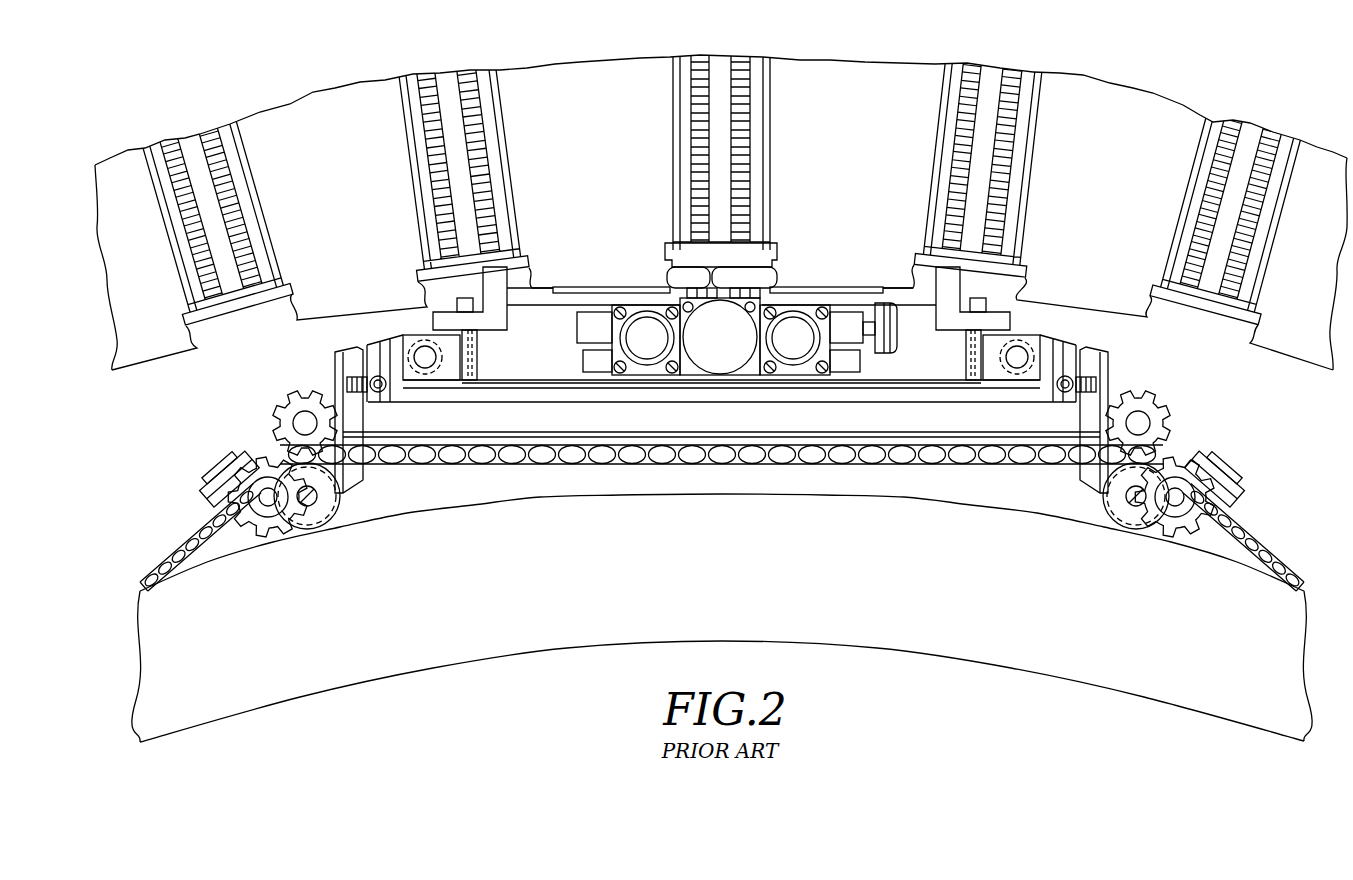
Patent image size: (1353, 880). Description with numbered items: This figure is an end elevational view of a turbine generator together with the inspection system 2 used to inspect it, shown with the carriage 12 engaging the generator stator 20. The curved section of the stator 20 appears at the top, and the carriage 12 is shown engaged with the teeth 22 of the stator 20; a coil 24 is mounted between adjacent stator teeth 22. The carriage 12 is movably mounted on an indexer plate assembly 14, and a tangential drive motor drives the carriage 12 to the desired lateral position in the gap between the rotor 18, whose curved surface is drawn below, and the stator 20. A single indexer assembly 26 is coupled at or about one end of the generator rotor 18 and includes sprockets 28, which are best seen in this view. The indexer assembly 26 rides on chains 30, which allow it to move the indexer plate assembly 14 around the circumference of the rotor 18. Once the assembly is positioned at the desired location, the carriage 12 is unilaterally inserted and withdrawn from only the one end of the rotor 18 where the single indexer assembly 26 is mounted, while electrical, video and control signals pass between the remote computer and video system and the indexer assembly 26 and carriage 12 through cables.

The inspection system 2 is at (878, 693).
The carriage 12 is at (694, 372).
The indexer plate assembly 14 is at (418, 317).
The rotor 18 is at (650, 628).
The stator 20 is at (721, 188).
The teeth 22 is at (1083, 93).
The coil 24 is at (1257, 135).
The indexer assembly 26 is at (550, 440).
The sprockets 28 is at (278, 537).
The chains 30 is at (192, 520).